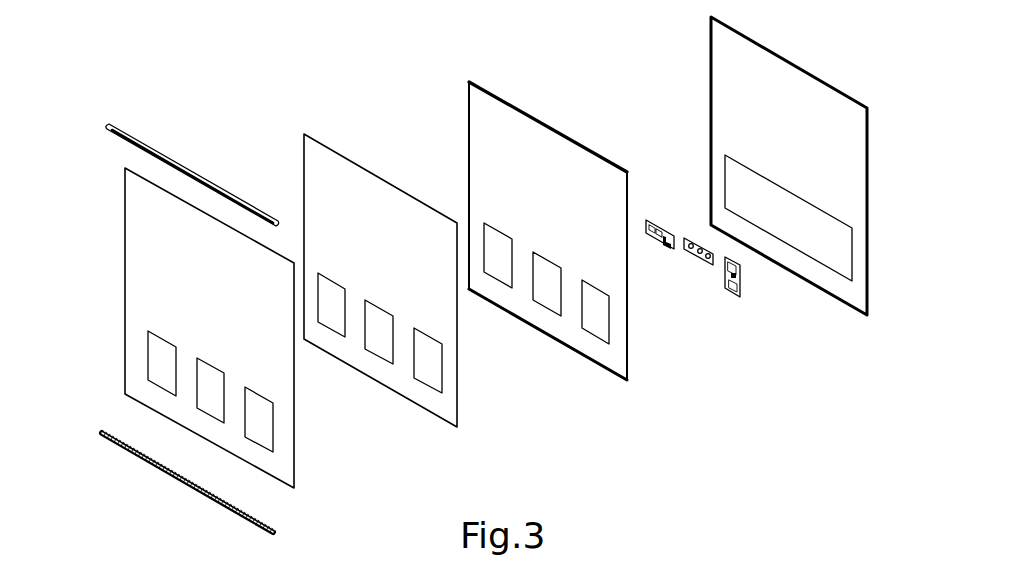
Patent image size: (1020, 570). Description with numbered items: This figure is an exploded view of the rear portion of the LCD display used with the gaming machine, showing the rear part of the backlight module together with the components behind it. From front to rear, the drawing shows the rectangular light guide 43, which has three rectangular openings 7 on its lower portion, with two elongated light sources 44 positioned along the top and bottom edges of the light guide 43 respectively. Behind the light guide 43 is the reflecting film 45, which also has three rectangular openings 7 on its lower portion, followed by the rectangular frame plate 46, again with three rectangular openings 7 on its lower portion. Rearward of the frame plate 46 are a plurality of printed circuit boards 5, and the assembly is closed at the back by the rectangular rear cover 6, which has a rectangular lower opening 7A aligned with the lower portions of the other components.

The printed circuit board 5 is at (700, 240).
The rear cover 6 is at (808, 62).
The rectangular opening 7 is at (269, 411).
The rectangular lower opening 7A is at (830, 252).
The light guide 43 is at (121, 233).
The elongated light source 44 is at (163, 150).
The reflecting film 45 is at (342, 157).
The frame plate 46 is at (488, 88).